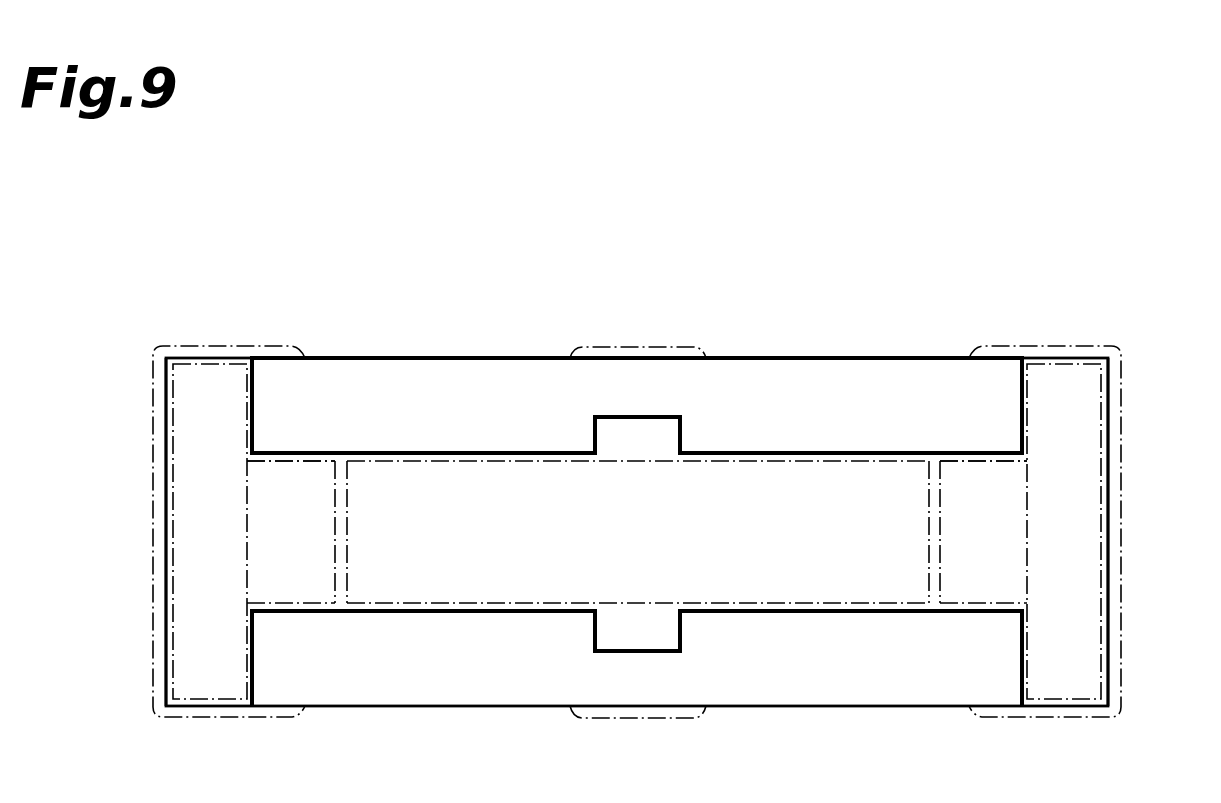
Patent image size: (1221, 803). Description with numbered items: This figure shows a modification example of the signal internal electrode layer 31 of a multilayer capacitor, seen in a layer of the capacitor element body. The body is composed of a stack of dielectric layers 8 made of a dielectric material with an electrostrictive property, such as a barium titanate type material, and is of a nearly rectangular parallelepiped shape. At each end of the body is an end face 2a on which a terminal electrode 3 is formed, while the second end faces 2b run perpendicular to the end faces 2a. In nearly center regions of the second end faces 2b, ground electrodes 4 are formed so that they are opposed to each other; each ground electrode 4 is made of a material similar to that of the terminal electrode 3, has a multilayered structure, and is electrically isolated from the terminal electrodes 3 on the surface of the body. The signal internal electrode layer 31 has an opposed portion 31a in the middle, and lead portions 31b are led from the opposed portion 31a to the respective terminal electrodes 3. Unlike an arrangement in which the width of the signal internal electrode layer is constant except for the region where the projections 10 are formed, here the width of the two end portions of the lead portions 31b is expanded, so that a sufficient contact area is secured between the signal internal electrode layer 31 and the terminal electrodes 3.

The end face 2a is at (166, 440).
The second end face 2b is at (908, 357).
The terminal electrode 3 is at (158, 538).
The ground electrode 4 is at (663, 356).
The dielectric layer 8 is at (768, 375).
The projection 10 is at (606, 435).
The signal internal electrode layer 31 is at (848, 493).
The opposed portion 31a is at (419, 487).
The lead portion 31b is at (302, 492).